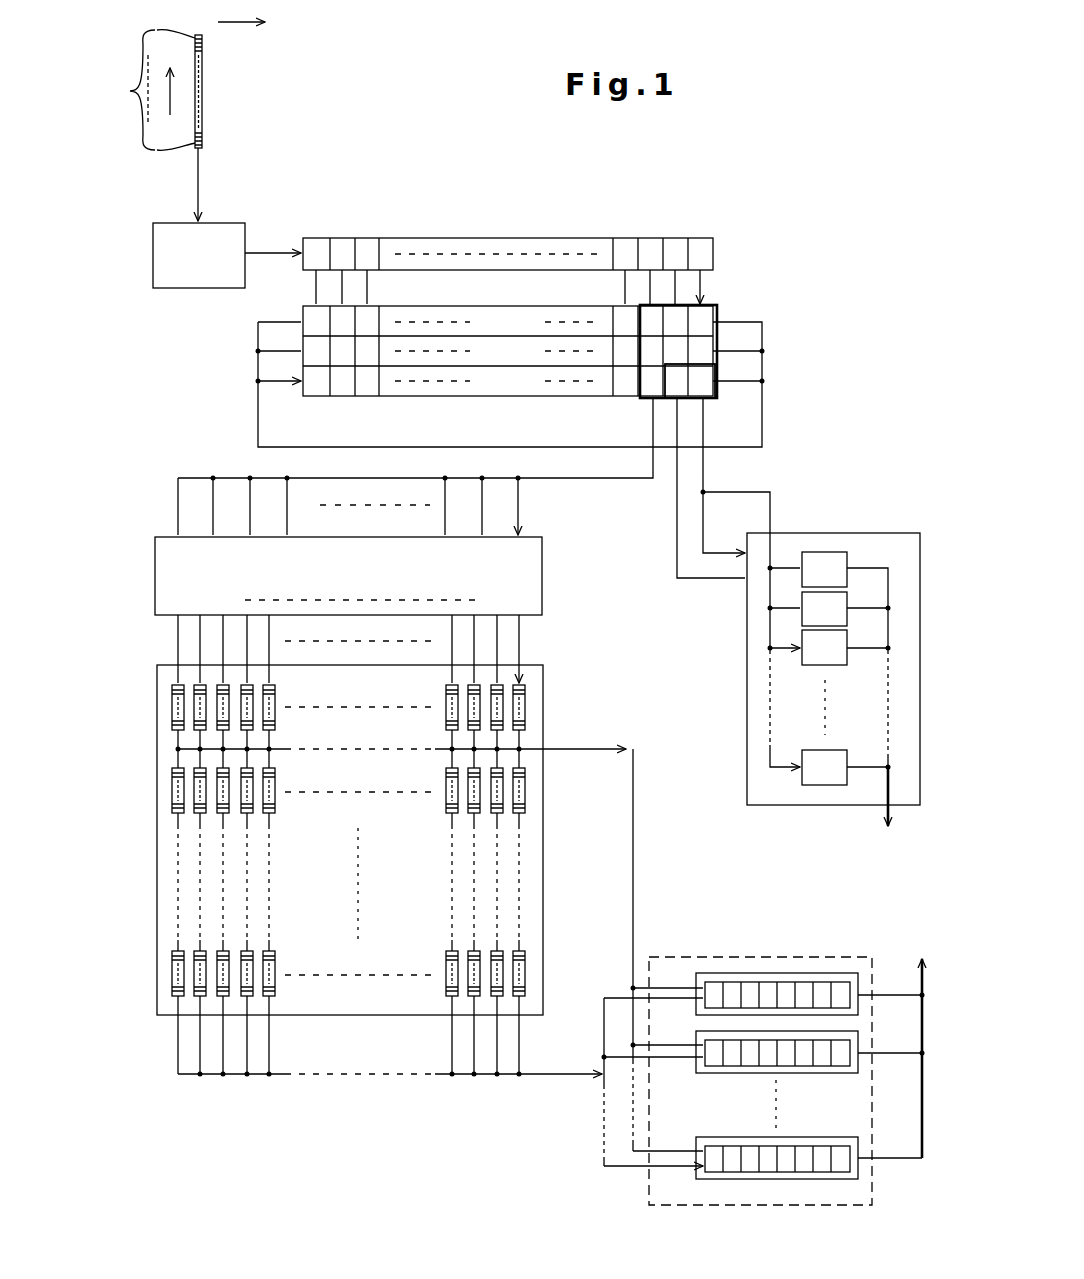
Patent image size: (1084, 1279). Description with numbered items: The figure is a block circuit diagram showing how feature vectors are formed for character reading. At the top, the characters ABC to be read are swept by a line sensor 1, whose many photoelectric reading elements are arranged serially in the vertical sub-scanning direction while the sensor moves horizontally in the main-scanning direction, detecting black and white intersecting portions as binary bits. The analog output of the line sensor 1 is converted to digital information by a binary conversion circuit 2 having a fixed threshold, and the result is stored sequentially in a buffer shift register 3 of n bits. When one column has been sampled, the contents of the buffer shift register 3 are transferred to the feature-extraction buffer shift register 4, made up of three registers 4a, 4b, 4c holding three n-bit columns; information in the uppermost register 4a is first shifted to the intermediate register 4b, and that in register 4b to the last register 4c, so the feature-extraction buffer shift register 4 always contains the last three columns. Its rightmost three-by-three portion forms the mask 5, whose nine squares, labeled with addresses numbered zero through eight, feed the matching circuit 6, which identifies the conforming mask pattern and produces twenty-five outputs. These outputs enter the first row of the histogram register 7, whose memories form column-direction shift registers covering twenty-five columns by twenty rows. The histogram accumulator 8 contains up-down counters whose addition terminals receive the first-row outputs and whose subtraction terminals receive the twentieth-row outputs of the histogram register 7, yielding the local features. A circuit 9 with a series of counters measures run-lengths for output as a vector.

The line sensor 1 is at (262, 96).
The binary conversion circuit 2 is at (200, 290).
The buffer shift register 3 is at (545, 238).
The feature-extraction buffer shift register 4 is at (510, 376).
The uppermost buffer shift register 4a is at (508, 323).
The intermediate buffer shift register 4b is at (509, 353).
The last buffer shift register 4c is at (509, 383).
The 3x3 mask 5 is at (722, 330).
The matching circuit 6 is at (543, 567).
The histogram register 7 is at (371, 846).
The histogram accumulator 8 is at (765, 981).
The run-length measuring circuit 9 is at (876, 533).